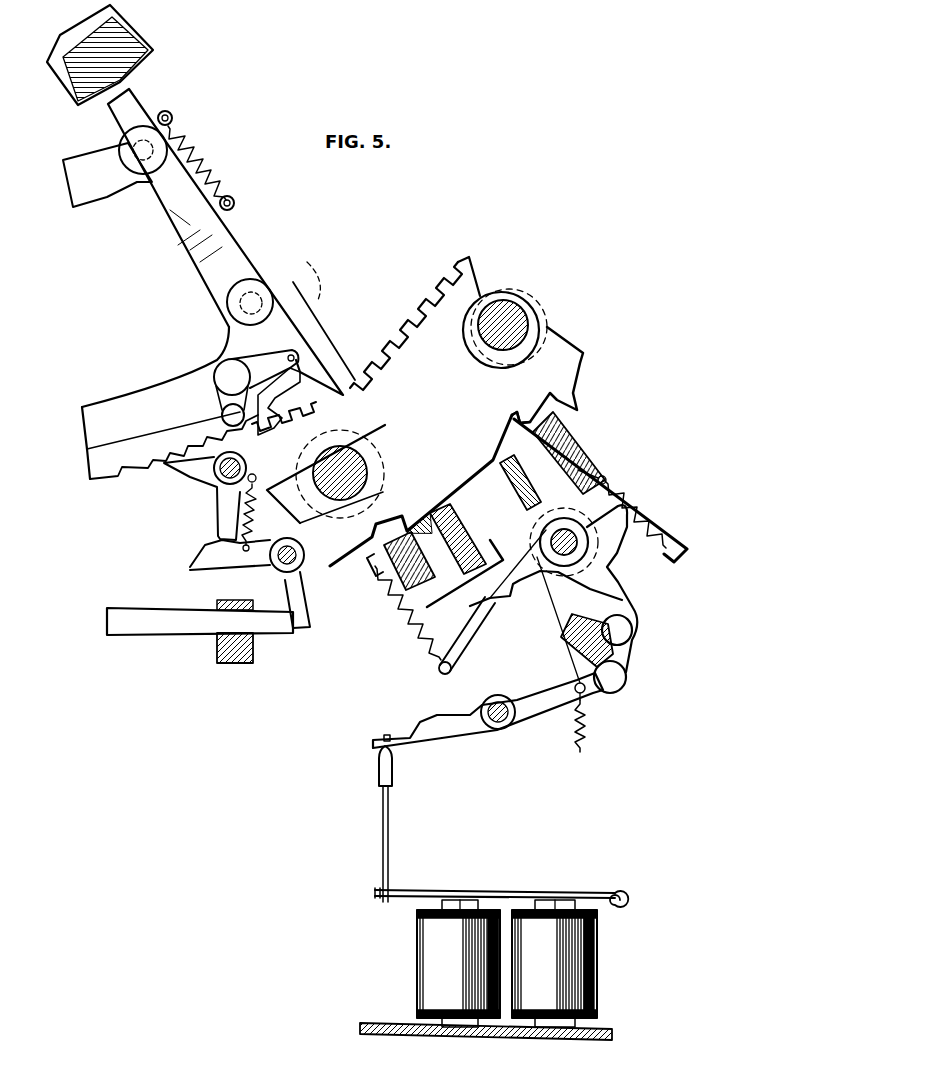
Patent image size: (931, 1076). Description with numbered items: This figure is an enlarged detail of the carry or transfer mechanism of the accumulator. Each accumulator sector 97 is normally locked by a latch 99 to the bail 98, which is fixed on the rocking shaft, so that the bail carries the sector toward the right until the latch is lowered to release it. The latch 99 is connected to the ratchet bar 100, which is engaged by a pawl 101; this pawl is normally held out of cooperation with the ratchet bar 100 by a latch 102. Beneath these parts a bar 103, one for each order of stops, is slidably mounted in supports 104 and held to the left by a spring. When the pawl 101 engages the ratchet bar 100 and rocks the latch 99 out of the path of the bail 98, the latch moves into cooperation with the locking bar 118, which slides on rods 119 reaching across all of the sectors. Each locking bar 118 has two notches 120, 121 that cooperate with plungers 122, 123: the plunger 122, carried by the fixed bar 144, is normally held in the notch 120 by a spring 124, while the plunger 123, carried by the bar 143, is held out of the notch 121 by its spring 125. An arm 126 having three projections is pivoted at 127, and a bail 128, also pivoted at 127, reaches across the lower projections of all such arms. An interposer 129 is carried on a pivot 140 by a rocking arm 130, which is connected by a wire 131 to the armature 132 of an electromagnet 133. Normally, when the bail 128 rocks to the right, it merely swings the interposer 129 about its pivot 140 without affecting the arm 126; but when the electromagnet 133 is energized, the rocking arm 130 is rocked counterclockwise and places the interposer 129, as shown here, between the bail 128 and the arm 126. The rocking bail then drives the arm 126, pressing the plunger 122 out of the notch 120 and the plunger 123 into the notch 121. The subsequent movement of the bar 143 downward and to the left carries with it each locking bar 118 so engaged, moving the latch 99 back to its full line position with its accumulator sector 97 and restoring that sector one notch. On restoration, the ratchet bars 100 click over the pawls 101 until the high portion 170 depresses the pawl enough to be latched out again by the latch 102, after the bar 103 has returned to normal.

The accumulator sector 97 is at (135, 397).
The bail 98 is at (150, 53).
The latch 99 is at (237, 263).
The ratchet bar 100 is at (107, 477).
The pawl 101 is at (188, 477).
The latch 102 is at (190, 568).
The bar 103 is at (143, 623).
The supports 104 is at (227, 652).
The locking bar 118 is at (467, 273).
The rods 119 is at (557, 305).
The notch 120 is at (387, 522).
The notch 121 is at (520, 413).
The plunger 122 is at (460, 590).
The plunger 123 is at (530, 453).
The spring 124 is at (423, 652).
The spring 125 is at (622, 514).
The arm 126 is at (610, 585).
The pivot 127 is at (552, 540).
The bail 128 is at (567, 637).
The interposer 129 is at (619, 631).
The rocking arm 130 is at (533, 708).
The wire 131 is at (383, 833).
The armature 132 is at (415, 893).
The electromagnet 133 is at (577, 965).
The pivot 140 is at (612, 678).
The bar 143 is at (571, 420).
The bar 144 is at (453, 527).
The high portion 170 is at (290, 433).